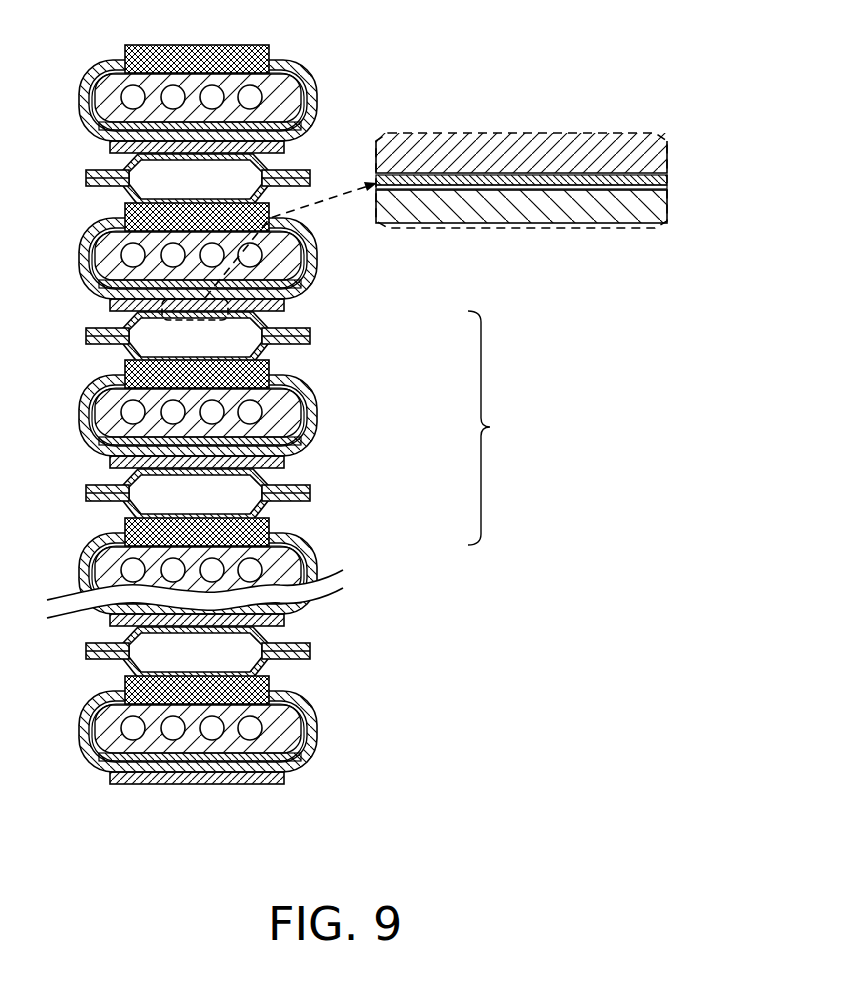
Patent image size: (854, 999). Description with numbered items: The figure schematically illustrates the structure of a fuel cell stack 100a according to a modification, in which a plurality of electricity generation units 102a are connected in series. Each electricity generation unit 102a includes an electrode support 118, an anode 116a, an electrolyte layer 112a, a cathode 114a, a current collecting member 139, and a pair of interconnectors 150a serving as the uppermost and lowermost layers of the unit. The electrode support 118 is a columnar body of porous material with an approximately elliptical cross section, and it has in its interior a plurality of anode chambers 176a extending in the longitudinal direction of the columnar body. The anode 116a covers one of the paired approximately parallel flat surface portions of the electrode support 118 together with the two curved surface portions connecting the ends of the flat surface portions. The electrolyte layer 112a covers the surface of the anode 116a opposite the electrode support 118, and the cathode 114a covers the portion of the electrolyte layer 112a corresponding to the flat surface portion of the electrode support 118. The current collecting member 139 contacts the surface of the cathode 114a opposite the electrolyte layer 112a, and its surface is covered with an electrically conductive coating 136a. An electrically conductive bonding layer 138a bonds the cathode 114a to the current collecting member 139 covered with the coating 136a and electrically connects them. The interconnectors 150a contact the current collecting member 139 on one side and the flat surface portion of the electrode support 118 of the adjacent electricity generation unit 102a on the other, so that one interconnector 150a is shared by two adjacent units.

The fuel cell stack 100a is at (368, 59).
The electricity generation unit 102a is at (509, 428).
The electrolyte layer 112a is at (300, 443).
The cathode 114a is at (293, 460).
The anode 116a is at (282, 420).
The electrode support 118 is at (265, 412).
The coating 136a is at (666, 188).
The bonding layer 138a is at (668, 180).
The current collecting member 139 is at (310, 490).
The interconnector 150a is at (270, 368).
The anode chamber 176a is at (293, 392).